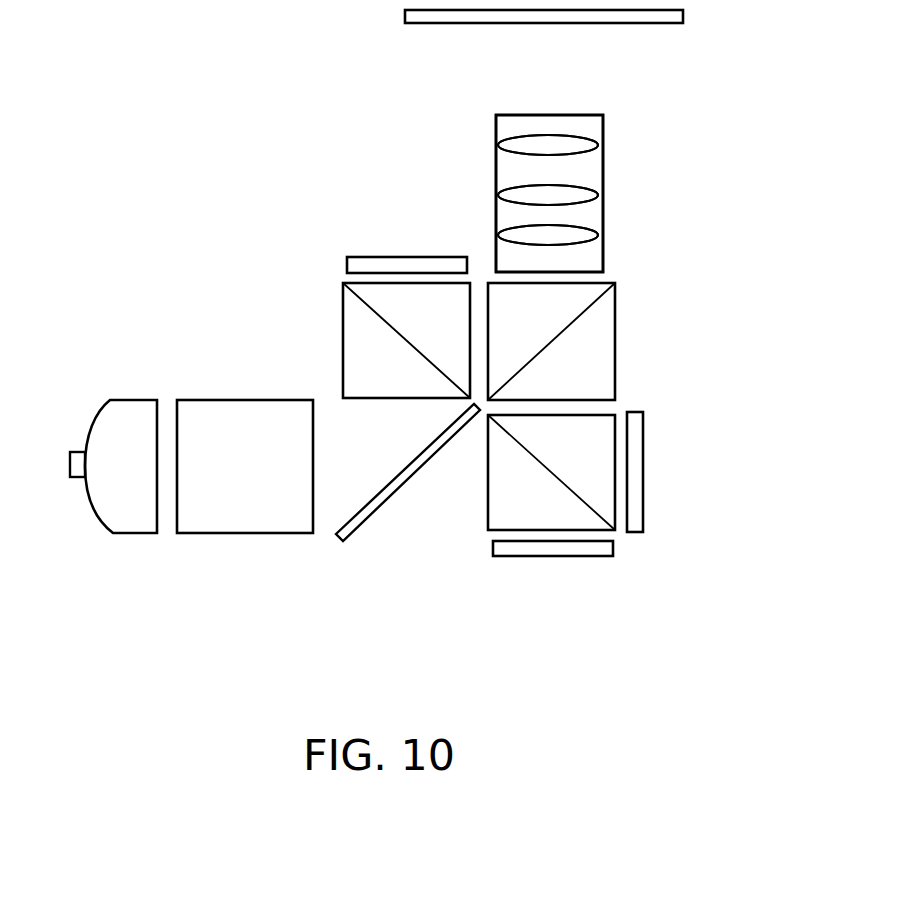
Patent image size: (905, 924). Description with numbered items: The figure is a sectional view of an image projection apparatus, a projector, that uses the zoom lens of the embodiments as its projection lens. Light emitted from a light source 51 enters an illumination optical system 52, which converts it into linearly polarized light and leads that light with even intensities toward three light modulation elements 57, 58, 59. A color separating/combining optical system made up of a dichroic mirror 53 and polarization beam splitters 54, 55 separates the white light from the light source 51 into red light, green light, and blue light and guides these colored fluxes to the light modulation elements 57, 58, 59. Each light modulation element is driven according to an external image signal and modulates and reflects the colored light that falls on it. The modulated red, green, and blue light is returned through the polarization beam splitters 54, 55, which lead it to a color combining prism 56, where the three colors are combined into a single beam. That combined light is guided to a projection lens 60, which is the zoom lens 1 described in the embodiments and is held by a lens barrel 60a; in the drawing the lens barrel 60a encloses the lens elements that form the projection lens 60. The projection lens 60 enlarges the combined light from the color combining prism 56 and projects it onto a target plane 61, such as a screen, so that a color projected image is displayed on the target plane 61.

The target plane 61 is at (558, 35).
The projection lens 60 is at (722, 115).
The zoom lens 1 is at (600, 235).
The lens barrel 60a is at (603, 250).
The light modulation element 57 is at (407, 231).
The polarization beam splitter 54 is at (376, 340).
The color combining prism 56 is at (586, 341).
The polarization beam splitter 55 is at (520, 474).
The light modulation element 59 is at (666, 472).
The light modulation element 58 is at (553, 584).
The dichroic mirror 53 is at (406, 507).
The illumination optical system 52 is at (245, 504).
The light source 51 is at (89, 458).